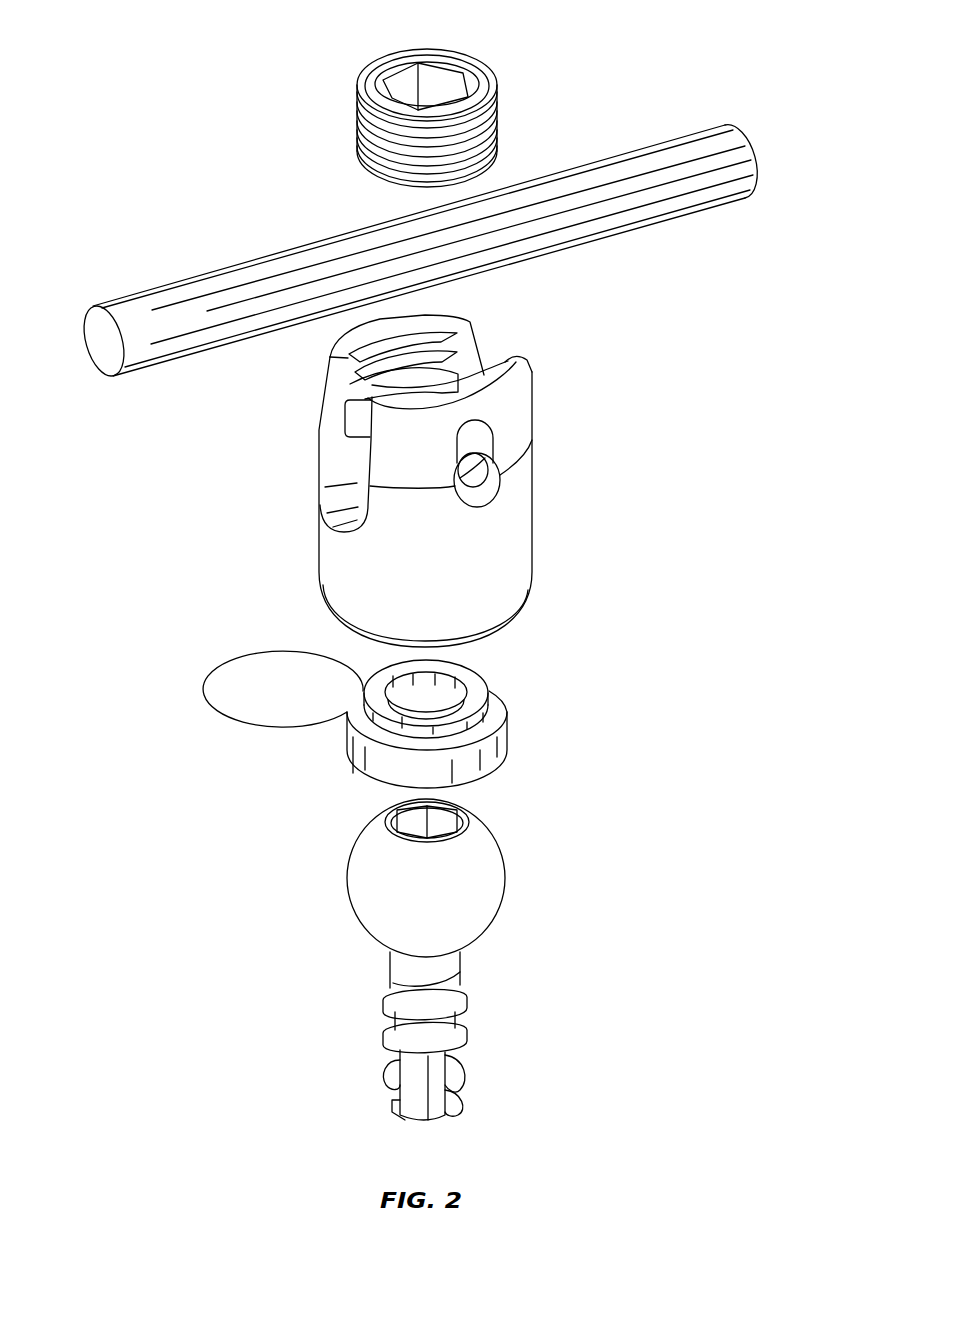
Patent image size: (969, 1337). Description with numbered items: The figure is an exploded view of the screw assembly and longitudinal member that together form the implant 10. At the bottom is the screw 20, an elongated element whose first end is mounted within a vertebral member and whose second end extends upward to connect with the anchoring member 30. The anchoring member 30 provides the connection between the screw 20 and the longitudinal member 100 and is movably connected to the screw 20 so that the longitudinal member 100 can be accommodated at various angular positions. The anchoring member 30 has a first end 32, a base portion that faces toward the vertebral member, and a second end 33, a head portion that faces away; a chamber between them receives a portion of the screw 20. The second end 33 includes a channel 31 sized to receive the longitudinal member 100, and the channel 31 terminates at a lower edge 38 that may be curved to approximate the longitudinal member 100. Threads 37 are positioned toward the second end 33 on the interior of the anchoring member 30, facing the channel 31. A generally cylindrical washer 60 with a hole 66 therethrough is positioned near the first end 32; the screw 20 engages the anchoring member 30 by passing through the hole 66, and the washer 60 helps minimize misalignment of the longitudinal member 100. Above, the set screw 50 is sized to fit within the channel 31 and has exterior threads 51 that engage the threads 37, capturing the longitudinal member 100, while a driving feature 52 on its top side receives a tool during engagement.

The implant 10 is at (712, 529).
The screw 20 is at (534, 881).
The anchoring member 30 is at (557, 502).
The channel 31 is at (486, 345).
The first end 32 is at (487, 641).
The second end 33 is at (510, 372).
The threads 37 is at (352, 366).
The lower edge 38 is at (345, 506).
The set screw 50 is at (525, 101).
The exterior threads 51 is at (375, 128).
The driving feature 52 is at (400, 87).
The washer 60 is at (537, 731).
The hole 66 is at (420, 695).
The longitudinal member 100 is at (233, 303).